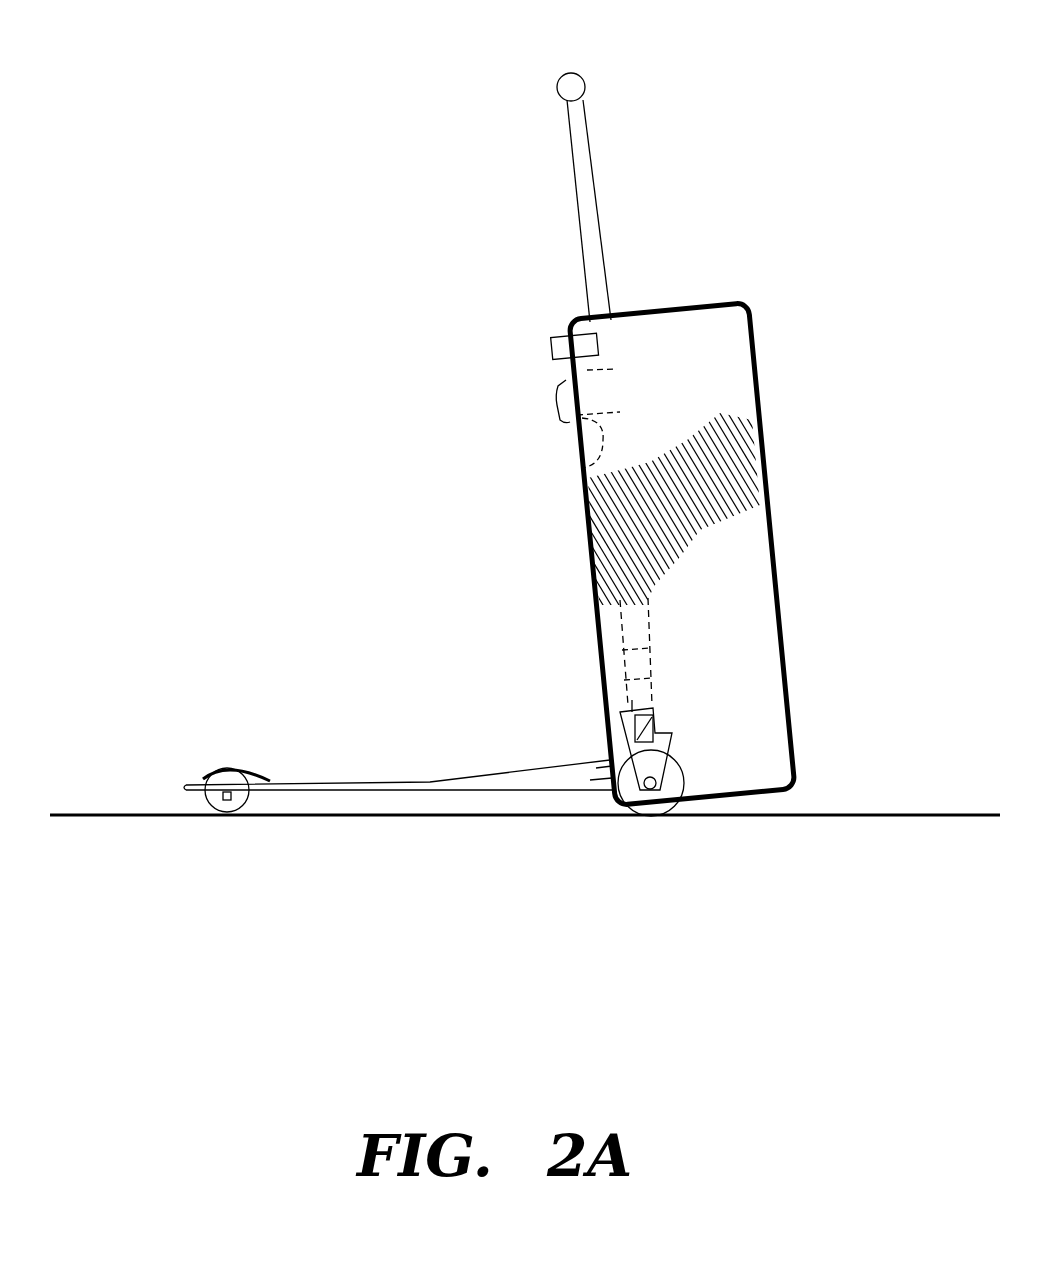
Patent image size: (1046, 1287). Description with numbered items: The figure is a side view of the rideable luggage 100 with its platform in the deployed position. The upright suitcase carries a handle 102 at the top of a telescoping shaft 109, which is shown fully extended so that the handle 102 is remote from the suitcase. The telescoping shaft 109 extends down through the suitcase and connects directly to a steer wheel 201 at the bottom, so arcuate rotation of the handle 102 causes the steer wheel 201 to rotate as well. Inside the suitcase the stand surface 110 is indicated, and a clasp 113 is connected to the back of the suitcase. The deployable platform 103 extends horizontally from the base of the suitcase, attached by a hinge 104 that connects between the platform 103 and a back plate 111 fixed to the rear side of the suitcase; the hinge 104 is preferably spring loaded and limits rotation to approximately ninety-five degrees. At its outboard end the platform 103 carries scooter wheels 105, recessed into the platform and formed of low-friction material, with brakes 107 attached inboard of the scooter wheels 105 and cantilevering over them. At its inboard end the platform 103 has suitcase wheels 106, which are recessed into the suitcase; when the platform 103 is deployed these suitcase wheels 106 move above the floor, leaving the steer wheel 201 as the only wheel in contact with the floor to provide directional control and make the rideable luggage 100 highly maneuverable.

The rideable luggage 100 is at (785, 322).
The handle 102 is at (572, 90).
The deployable platform 103 is at (360, 782).
The hinge 104 is at (600, 767).
The scooter wheels 105 is at (225, 808).
The suitcase wheels 106 is at (657, 707).
The brakes 107 is at (233, 765).
The telescoping shaft 109 is at (587, 223).
The stand surface 110 is at (648, 618).
The back plate 111 is at (603, 777).
The clasp 113 is at (558, 392).
The steer wheel 201 is at (662, 813).